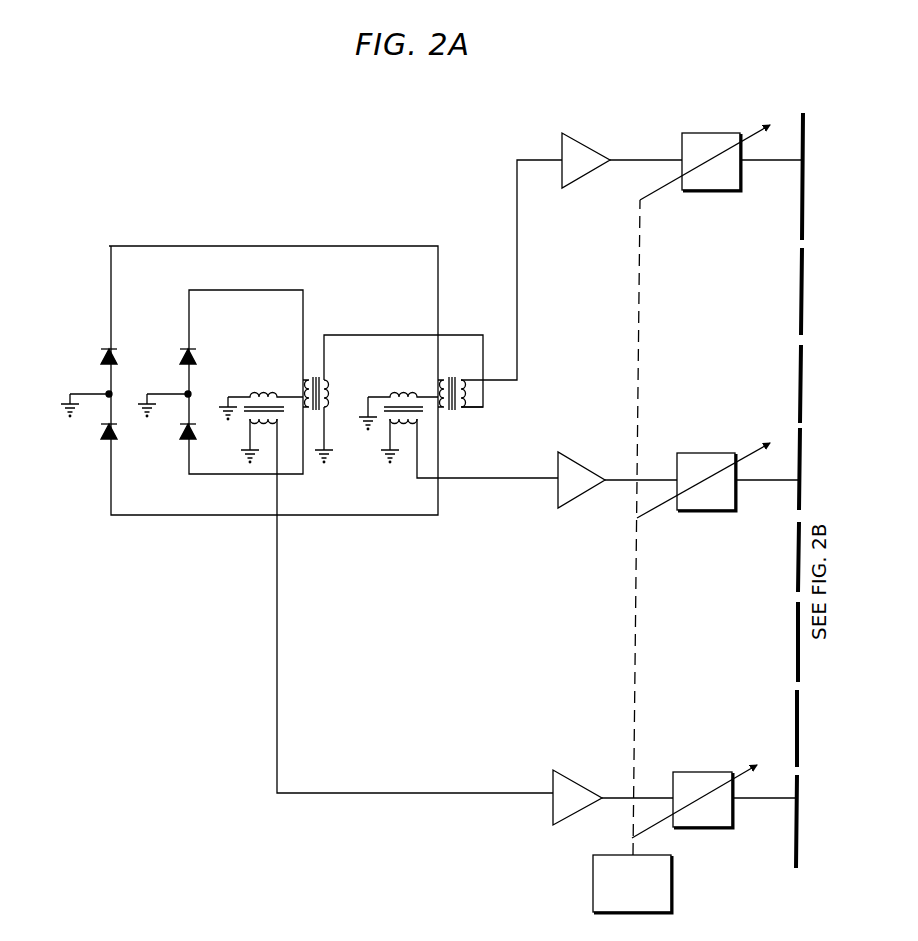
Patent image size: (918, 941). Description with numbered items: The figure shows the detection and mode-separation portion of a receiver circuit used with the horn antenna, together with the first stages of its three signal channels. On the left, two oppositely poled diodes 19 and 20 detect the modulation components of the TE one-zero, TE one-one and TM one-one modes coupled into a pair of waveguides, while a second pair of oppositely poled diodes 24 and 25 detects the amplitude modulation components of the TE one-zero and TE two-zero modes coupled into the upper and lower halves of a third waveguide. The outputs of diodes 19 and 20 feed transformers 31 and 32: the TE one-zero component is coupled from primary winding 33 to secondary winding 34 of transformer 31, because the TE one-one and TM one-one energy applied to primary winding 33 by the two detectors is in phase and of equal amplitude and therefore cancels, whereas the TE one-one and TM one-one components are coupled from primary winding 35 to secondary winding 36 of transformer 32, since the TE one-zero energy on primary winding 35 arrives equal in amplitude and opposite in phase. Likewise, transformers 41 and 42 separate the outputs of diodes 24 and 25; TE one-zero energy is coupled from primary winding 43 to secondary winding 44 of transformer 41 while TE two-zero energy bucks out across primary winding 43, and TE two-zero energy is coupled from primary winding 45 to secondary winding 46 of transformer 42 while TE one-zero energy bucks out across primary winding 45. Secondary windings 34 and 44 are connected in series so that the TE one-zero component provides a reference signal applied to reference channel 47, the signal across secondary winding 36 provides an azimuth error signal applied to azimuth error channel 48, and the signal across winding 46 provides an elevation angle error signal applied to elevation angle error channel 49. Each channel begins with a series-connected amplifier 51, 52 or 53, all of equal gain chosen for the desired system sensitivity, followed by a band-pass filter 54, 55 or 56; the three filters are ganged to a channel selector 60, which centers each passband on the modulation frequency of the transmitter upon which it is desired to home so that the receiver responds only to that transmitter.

The diode 19 is at (102, 347).
The diode 20 is at (102, 434).
The diode 24 is at (182, 347).
The diode 25 is at (179, 434).
The transformer 31 is at (448, 377).
The transformer 32 is at (425, 412).
The primary winding 33 is at (438, 386).
The secondary winding 34 is at (465, 409).
The primary winding 35 is at (397, 393).
The secondary winding 36 is at (393, 426).
The transformer 41 is at (316, 376).
The transformer 42 is at (282, 410).
The primary winding 43 is at (303, 386).
The secondary winding 44 is at (330, 392).
The primary winding 45 is at (262, 393).
The secondary winding 46 is at (254, 426).
The reference channel 47 is at (788, 164).
The azimuth error channel 48 is at (786, 484).
The elevation angle error channel 49 is at (785, 802).
The amplifier 51 is at (579, 144).
The amplifier 52 is at (566, 459).
The amplifier 53 is at (567, 784).
The band-pass filter 54 is at (706, 133).
The band-pass filter 55 is at (698, 453).
The band-pass filter 56 is at (696, 772).
The channel selector 60 is at (608, 855).